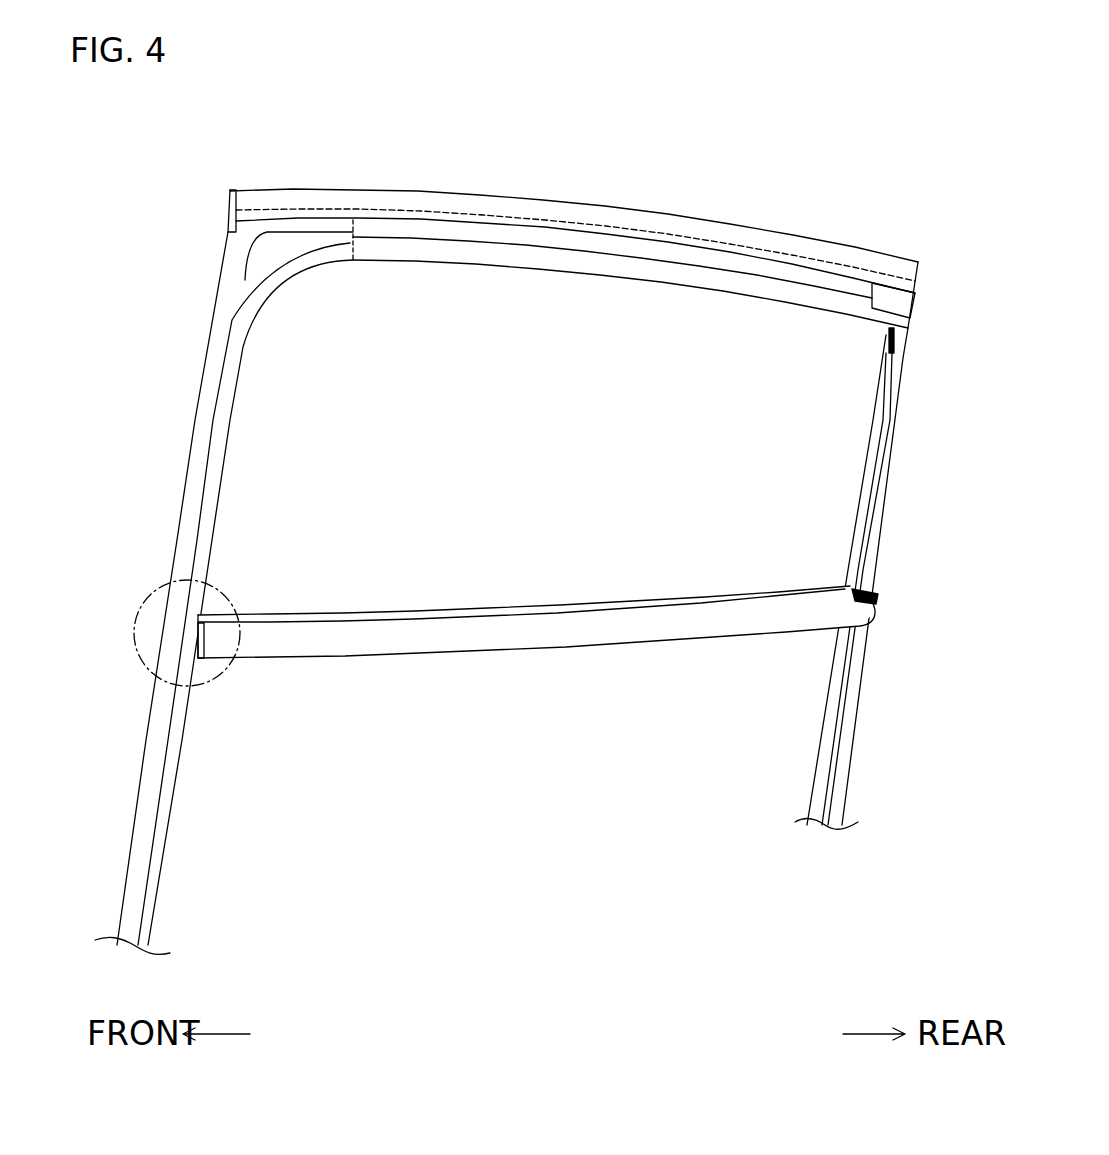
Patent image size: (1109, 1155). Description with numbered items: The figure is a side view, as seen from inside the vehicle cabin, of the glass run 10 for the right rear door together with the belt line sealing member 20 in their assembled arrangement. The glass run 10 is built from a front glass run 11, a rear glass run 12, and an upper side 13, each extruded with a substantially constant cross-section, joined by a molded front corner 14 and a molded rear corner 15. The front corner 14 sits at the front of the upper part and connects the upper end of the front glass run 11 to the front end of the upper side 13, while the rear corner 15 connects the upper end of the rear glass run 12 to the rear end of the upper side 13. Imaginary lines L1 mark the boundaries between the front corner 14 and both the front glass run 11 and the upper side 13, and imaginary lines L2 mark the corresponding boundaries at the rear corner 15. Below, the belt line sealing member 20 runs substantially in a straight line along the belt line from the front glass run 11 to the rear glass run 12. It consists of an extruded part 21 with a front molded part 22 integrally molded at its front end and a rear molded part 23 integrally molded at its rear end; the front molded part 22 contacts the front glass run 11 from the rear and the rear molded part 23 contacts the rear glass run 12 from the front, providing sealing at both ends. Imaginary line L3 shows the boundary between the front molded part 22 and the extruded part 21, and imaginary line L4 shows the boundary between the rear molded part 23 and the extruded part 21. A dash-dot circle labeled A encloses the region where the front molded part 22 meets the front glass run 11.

The glass run 10 is at (722, 186).
The front glass run 11 is at (183, 468).
The rear glass run 12 is at (845, 748).
The upper side 13 is at (530, 193).
The front corner 14 is at (217, 277).
The rear corner 15 is at (912, 308).
The belt line sealing member 20 is at (567, 592).
The extruded part 21 is at (462, 656).
The front molded part 22 is at (194, 643).
The rear molded part 23 is at (877, 613).
The enlarged region A is at (150, 588).
The imaginary lines L1 is at (353, 260).
The imaginary lines L2 is at (872, 283).
The imaginary line L3 is at (197, 643).
The imaginary line L4 is at (833, 598).